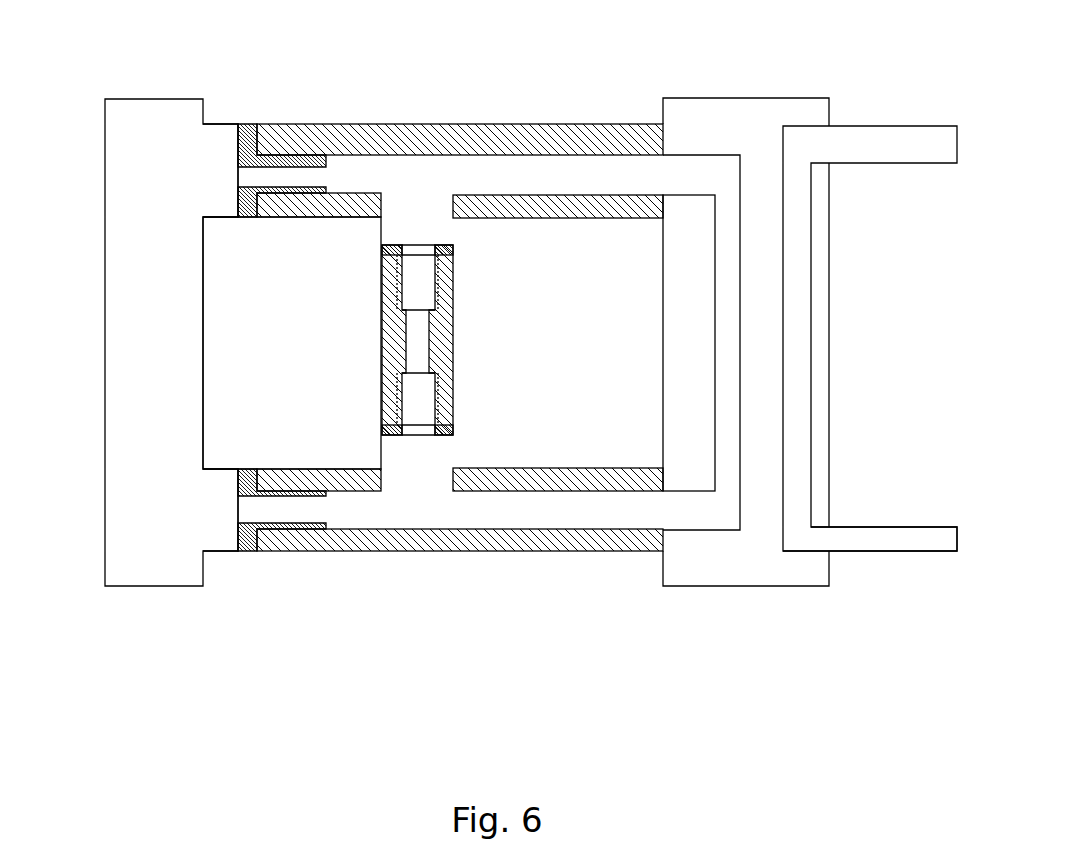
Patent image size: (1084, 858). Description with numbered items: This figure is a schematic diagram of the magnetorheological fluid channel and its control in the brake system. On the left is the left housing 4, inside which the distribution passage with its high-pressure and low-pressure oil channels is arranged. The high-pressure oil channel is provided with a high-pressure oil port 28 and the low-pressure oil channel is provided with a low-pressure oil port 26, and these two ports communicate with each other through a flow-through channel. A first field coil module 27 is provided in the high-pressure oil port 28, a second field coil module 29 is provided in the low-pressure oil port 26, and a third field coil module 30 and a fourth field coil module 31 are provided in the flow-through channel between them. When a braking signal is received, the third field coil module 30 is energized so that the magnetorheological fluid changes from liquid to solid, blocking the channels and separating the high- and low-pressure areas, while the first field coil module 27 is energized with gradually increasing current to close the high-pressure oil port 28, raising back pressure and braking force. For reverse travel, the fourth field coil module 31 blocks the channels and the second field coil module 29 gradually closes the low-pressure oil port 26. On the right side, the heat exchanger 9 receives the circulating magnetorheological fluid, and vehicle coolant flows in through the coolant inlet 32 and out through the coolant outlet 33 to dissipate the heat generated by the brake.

The left housing 4 is at (118, 342).
The heat exchanger 9 is at (722, 133).
The low-pressure oil port 26 is at (212, 520).
The first field coil module 27 is at (255, 150).
The high-pressure oil port 28 is at (218, 152).
The second field coil module 29 is at (250, 537).
The third field coil module 30 is at (395, 245).
The fourth field coil module 31 is at (395, 440).
The coolant inlet 32 is at (875, 149).
The coolant outlet 33 is at (855, 543).